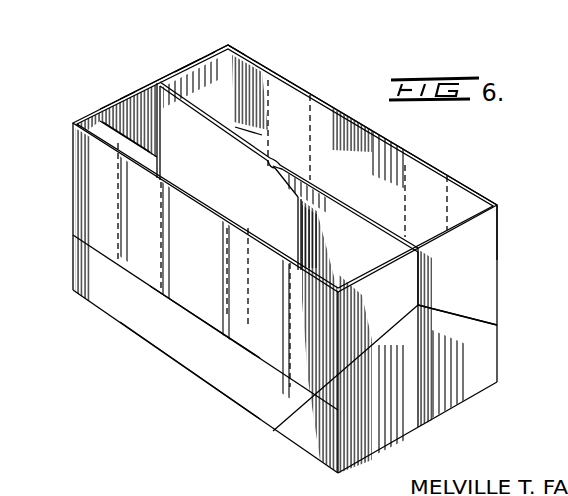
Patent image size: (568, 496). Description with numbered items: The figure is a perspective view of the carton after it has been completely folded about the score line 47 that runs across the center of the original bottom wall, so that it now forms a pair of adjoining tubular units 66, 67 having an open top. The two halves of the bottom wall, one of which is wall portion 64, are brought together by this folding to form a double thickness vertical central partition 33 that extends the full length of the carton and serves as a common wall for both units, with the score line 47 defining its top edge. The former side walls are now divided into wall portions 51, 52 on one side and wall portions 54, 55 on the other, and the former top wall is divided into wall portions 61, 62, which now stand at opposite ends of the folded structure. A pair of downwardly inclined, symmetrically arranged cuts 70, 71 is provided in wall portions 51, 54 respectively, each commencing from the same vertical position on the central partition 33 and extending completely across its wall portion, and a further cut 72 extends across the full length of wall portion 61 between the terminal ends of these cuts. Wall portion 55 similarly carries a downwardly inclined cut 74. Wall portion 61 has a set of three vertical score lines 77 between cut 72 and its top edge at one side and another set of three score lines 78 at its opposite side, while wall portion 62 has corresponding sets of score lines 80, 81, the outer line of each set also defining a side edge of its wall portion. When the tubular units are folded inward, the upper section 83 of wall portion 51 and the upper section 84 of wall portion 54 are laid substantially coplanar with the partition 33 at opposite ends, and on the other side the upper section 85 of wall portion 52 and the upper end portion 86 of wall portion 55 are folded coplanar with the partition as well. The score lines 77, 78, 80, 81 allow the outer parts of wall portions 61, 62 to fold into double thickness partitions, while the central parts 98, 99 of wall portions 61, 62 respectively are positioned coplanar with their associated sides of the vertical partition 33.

The central partition 33 is at (235, 127).
The score line 47 is at (352, 214).
The wall portion 51 is at (140, 83).
The wall portion 52 is at (173, 64).
The wall portion 54 is at (398, 409).
The wall portion 55 is at (475, 344).
The wall portion 61 is at (183, 334).
The wall portion 62 is at (470, 183).
The wall portion 64 is at (240, 208).
The tubular unit 66 is at (118, 94).
The tubular unit 67 is at (188, 62).
The cut 70 is at (123, 116).
The cut 71 is at (347, 400).
The cut 72 is at (210, 328).
The cut 74 is at (473, 318).
The score lines 77 is at (160, 223).
The score lines 78 is at (247, 332).
The score lines 80 is at (236, 56).
The score lines 81 is at (403, 177).
The upper section 83 is at (124, 114).
The upper section 84 is at (377, 307).
The upper section 85 is at (226, 57).
The upper end portion 86 is at (478, 254).
The central part 98 is at (177, 268).
The central part 99 is at (330, 110).